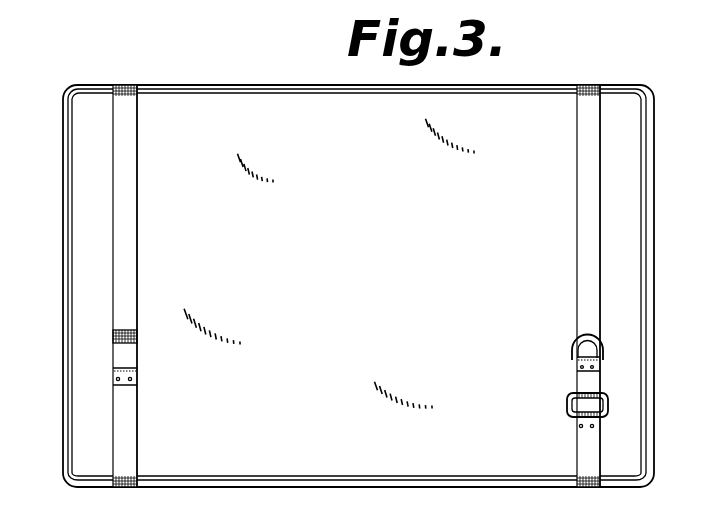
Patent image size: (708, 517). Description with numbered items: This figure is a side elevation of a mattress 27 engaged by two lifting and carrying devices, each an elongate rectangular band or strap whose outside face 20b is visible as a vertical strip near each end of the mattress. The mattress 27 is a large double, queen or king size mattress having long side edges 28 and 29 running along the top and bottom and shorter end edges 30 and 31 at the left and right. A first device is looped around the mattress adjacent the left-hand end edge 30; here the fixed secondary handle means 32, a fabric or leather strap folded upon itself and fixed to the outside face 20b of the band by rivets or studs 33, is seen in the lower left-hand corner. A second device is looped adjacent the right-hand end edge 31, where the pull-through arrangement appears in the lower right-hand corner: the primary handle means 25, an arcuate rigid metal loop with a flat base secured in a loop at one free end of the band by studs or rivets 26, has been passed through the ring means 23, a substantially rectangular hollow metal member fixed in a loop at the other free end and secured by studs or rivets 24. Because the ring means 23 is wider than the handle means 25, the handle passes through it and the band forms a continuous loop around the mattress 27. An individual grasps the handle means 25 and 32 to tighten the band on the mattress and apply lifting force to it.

The outside face 20b is at (131, 218).
The ring means 23 is at (623, 392).
The studs or rivets 24 is at (576, 426).
The primary handle means 25 is at (587, 337).
The studs or rivets 26 is at (578, 368).
The mattress 27 is at (373, 279).
The long side edge 28 is at (293, 85).
The long side edge 29 is at (420, 487).
The end edge 30 is at (63, 316).
The end edge 31 is at (654, 296).
The secondary handle means 32 is at (133, 342).
The rivets or studs 33 is at (133, 380).